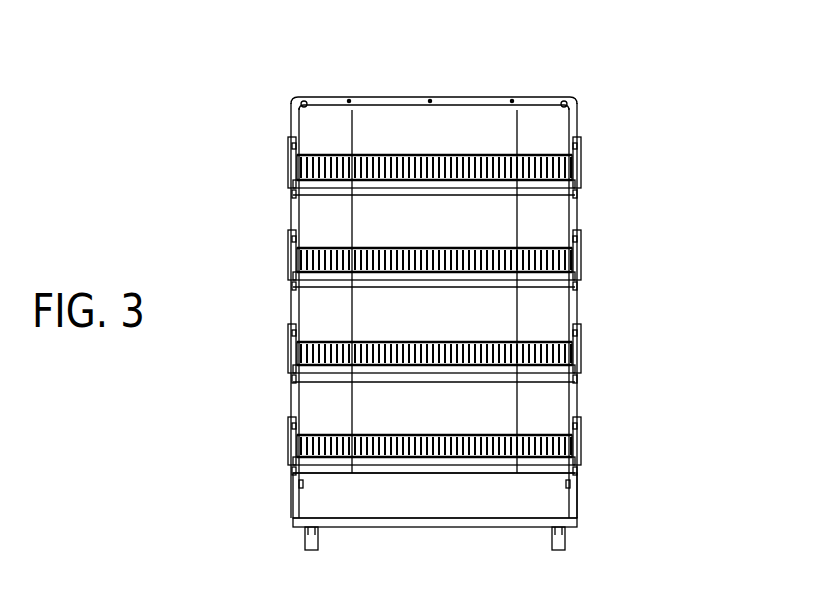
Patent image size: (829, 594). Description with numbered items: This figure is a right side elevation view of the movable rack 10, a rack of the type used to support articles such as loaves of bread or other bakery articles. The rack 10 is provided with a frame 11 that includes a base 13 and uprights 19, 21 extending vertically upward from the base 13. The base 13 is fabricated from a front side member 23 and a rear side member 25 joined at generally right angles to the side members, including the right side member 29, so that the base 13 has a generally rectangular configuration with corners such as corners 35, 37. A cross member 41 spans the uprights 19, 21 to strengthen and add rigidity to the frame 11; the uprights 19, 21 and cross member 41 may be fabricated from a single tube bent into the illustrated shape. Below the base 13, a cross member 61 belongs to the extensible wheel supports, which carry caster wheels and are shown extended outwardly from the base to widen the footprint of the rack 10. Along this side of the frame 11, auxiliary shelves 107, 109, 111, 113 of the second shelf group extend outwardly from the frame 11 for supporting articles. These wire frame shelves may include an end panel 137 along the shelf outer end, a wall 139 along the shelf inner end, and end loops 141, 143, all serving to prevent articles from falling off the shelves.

The movable rack 10 is at (250, 78).
The frame 11 is at (668, 105).
The base 13 is at (290, 503).
The upright 19 is at (292, 402).
The upright 21 is at (578, 120).
The front side member 23 is at (290, 490).
The rear side member 25 is at (578, 492).
The right side member 29 is at (490, 500).
The corner 35 is at (300, 505).
The corner 37 is at (575, 485).
The cross member 41 is at (470, 100).
The cross member 61 is at (382, 520).
The auxiliary shelf 107 is at (555, 450).
The auxiliary shelf 109 is at (560, 352).
The auxiliary shelf 111 is at (560, 268).
The auxiliary shelf 113 is at (565, 172).
The end panel 137 is at (300, 292).
The wall 139 is at (412, 262).
The end loop 141 is at (290, 240).
The end loop 143 is at (578, 238).